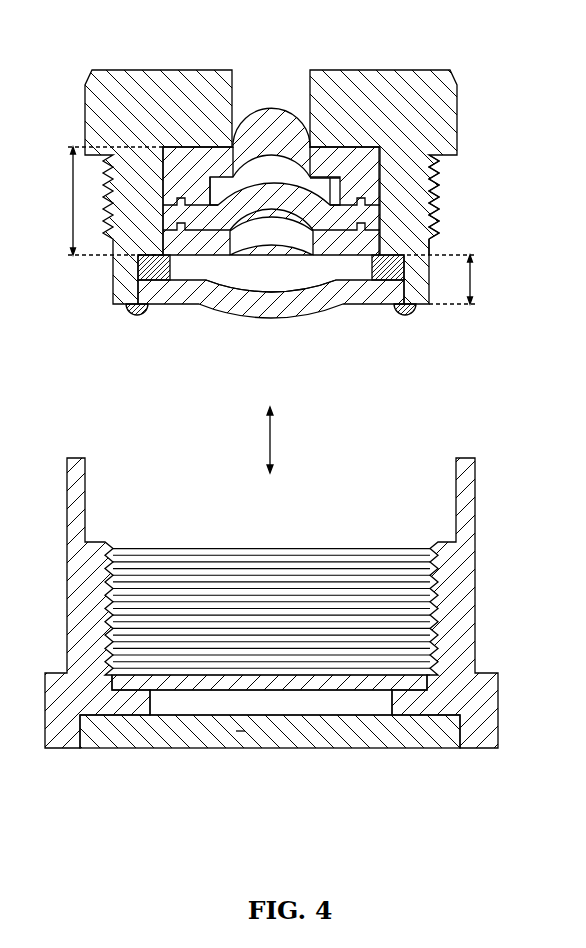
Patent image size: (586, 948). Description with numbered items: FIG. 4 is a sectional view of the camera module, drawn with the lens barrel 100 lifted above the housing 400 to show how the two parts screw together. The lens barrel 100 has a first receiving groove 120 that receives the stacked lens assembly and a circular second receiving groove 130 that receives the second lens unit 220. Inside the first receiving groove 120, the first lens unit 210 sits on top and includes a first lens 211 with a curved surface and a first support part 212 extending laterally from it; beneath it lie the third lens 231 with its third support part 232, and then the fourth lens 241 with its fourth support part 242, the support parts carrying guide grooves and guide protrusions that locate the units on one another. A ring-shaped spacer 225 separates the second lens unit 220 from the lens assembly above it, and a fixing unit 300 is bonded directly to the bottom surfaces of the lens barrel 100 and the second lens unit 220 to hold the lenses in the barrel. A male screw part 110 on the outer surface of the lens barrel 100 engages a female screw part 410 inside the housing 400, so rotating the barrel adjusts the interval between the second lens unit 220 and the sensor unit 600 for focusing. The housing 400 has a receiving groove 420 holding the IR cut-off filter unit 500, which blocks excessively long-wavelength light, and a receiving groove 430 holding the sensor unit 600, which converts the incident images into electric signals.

The lens barrel 100 is at (93, 103).
The male screw part 110 is at (440, 170).
The first receiving groove 120 is at (103, 201).
The second receiving groove 130 is at (452, 279).
The first lens unit 210 is at (271, 132).
The first lens 211 is at (281, 115).
The first support part 212 is at (343, 153).
The second lens unit 220 is at (324, 296).
The spacer 225 is at (431, 237).
The third lens 231 is at (272, 211).
The third support part 232 is at (300, 270).
The fourth lens 241 is at (248, 236).
The fourth support part 242 is at (200, 255).
The fixing unit 300 is at (137, 318).
The housing 400 is at (484, 583).
The female screw part 410 is at (418, 616).
The receiving groove 420 is at (356, 687).
The receiving groove 430 is at (245, 734).
The IR cut-off filter unit 500 is at (298, 683).
The sensor unit 600 is at (170, 735).